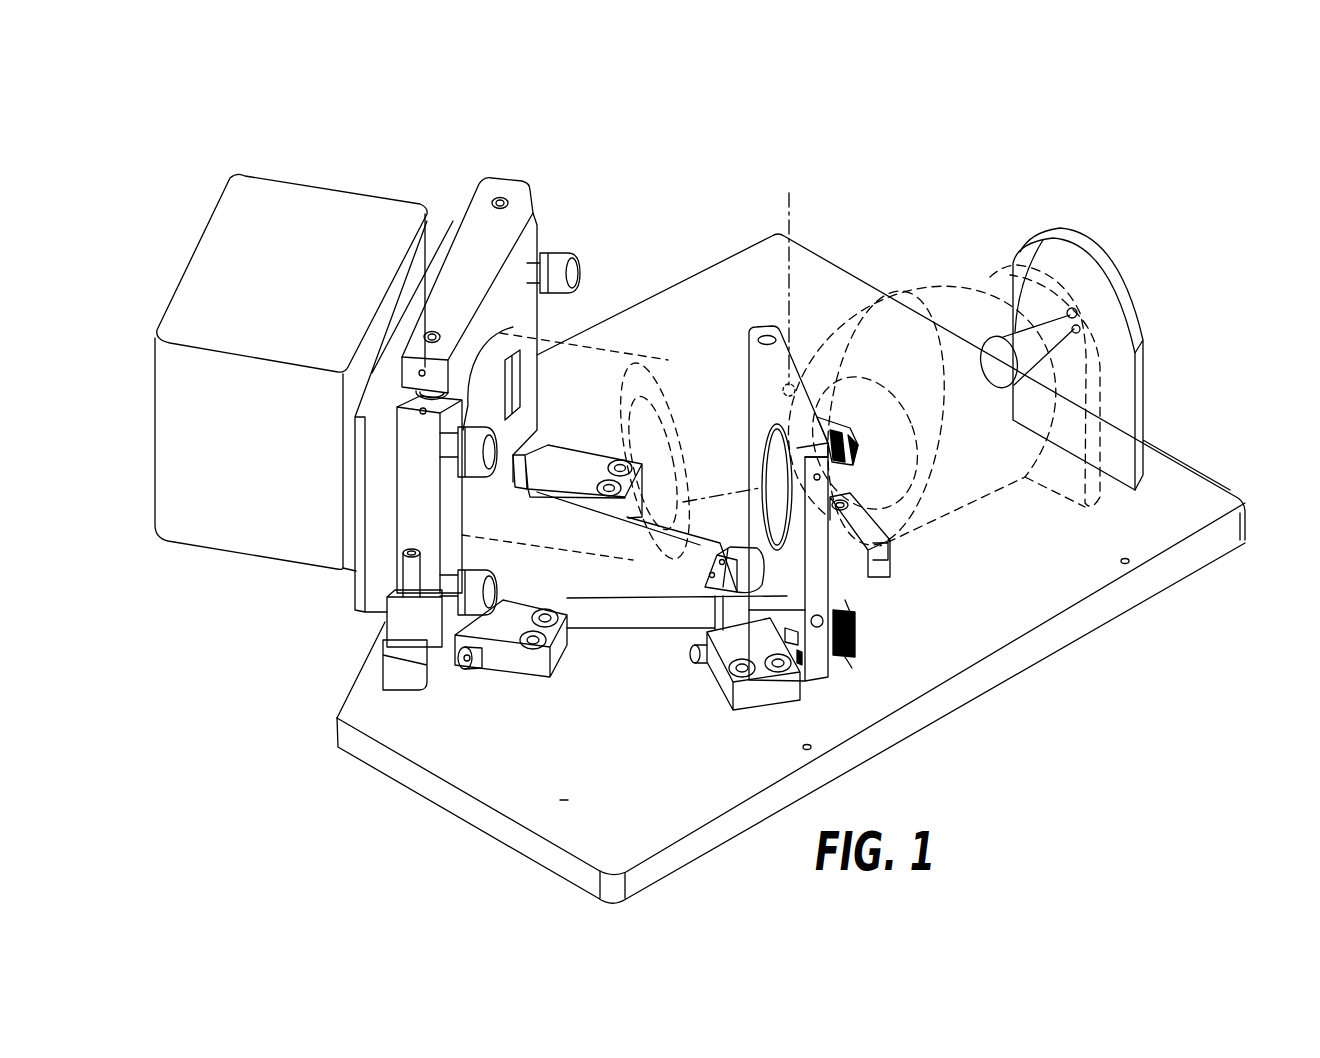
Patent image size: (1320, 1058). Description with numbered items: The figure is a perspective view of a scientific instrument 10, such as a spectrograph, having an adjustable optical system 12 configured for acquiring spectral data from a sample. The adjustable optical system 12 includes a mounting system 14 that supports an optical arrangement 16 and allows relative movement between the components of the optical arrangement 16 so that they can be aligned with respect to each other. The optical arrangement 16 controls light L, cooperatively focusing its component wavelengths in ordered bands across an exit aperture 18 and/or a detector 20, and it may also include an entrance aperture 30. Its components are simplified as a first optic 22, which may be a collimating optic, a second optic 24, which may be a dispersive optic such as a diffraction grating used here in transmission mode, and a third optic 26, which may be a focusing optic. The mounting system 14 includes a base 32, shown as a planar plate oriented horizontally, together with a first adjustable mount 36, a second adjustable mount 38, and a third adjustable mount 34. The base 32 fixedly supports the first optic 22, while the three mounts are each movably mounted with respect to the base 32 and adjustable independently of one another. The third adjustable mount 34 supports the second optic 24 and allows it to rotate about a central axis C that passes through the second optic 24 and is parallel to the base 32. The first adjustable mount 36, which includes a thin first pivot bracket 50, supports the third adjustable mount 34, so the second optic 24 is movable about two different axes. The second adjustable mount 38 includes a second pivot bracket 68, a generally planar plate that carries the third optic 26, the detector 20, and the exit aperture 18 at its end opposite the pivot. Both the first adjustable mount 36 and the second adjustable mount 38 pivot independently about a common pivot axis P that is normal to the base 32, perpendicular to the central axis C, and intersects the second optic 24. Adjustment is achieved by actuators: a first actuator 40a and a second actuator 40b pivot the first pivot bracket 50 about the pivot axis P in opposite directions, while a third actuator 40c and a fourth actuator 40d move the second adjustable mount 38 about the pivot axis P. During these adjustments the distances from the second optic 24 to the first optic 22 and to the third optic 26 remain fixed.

The scientific instrument 10 is at (604, 100).
The adjustable optical system 12 is at (963, 702).
The mounting system 14 is at (471, 708).
The optical arrangement 16 is at (944, 530).
The exit aperture 18 is at (492, 387).
The detector 20 is at (338, 217).
The first optic 22 is at (913, 284).
The second optic 24 is at (752, 433).
The third optic 26 is at (628, 347).
The entrance aperture 30 is at (1040, 318).
The base 32 is at (568, 800).
The third adjustable mount 34 is at (782, 568).
The first adjustable mount 36 is at (813, 417).
The second adjustable mount 38 is at (592, 632).
The first actuator 40a is at (720, 687).
The second actuator 40b is at (857, 567).
The third actuator 40c is at (498, 662).
The fourth actuator 40d is at (563, 465).
The first pivot bracket 50 is at (757, 523).
The second pivot bracket 68 is at (635, 610).
The light L is at (1069, 313).
The pivot axis P is at (792, 222).
The central axis C is at (732, 490).